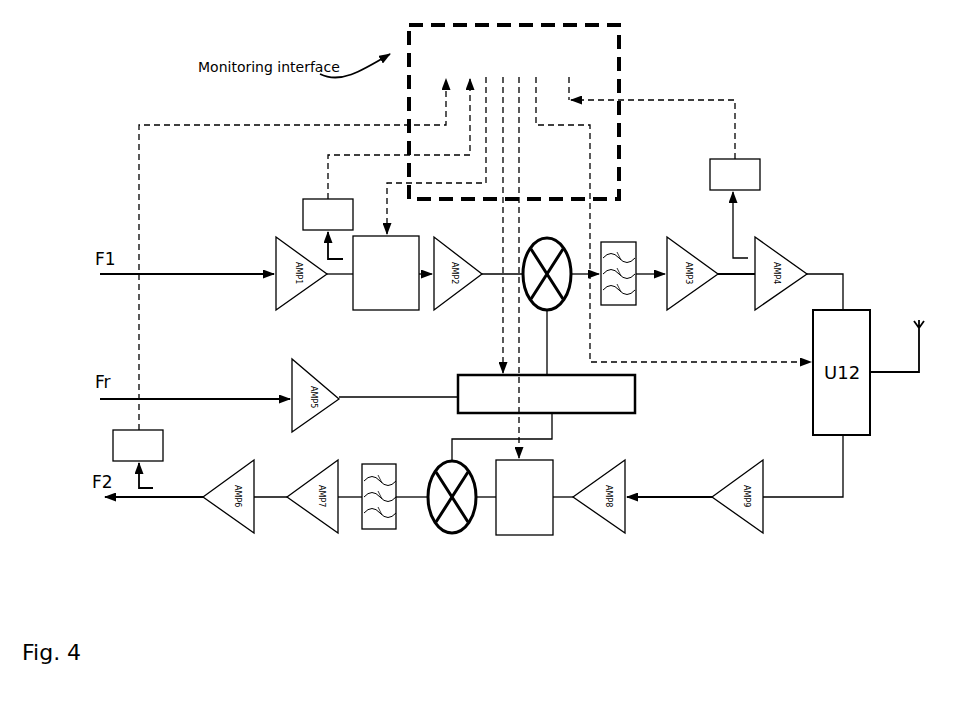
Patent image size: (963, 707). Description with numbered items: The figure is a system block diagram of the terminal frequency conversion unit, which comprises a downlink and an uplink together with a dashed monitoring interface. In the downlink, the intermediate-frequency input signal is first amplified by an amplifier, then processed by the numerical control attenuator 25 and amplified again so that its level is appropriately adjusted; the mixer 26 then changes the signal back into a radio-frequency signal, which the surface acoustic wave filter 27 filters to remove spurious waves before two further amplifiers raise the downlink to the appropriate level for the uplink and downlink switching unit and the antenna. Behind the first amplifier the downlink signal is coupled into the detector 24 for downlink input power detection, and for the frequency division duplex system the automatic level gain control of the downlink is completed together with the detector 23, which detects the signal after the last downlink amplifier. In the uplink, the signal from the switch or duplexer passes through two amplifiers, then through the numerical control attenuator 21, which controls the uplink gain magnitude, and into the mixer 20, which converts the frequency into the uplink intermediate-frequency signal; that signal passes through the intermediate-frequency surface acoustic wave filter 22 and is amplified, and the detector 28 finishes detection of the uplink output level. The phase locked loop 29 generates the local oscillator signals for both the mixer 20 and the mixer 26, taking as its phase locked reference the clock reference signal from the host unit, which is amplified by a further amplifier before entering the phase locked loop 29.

The mixer 20 is at (445, 548).
The numerical control attenuator 21 is at (514, 548).
The IF SAW filter 22 is at (370, 546).
The detector 23 is at (772, 174).
The detector 24 is at (298, 208).
The numerical control attenuator 25 is at (390, 315).
The mixer 26 is at (558, 312).
The surface acoustic wave filter 27 is at (642, 315).
The detector 28 is at (172, 433).
The PLL 29 is at (642, 407).